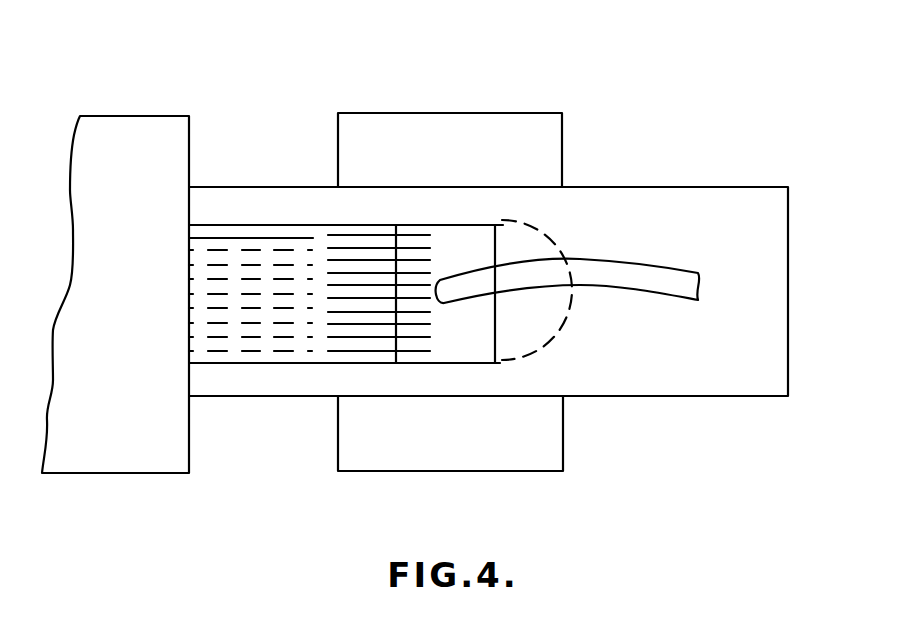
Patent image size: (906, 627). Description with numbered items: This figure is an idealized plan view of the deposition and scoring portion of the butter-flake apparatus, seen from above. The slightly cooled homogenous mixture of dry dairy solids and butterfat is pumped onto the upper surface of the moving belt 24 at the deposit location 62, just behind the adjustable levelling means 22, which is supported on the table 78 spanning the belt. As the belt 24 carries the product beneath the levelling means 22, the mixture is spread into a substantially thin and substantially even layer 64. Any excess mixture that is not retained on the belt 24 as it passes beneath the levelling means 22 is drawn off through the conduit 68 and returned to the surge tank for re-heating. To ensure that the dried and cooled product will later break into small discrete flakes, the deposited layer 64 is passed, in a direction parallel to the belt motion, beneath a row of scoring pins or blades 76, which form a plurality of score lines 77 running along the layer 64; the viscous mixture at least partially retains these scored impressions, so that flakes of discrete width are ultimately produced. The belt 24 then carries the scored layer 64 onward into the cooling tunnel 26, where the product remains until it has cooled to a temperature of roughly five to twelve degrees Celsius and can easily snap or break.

The levelling means 22 is at (477, 340).
The moving belt 24 is at (657, 200).
The cooling tunnel 26 is at (135, 128).
The deposit location 62 is at (530, 243).
The layer 64 is at (260, 237).
The conduit 68 is at (653, 273).
The scoring pins or blades 76 is at (367, 268).
The score lines 77 is at (245, 327).
The table 78 is at (550, 450).